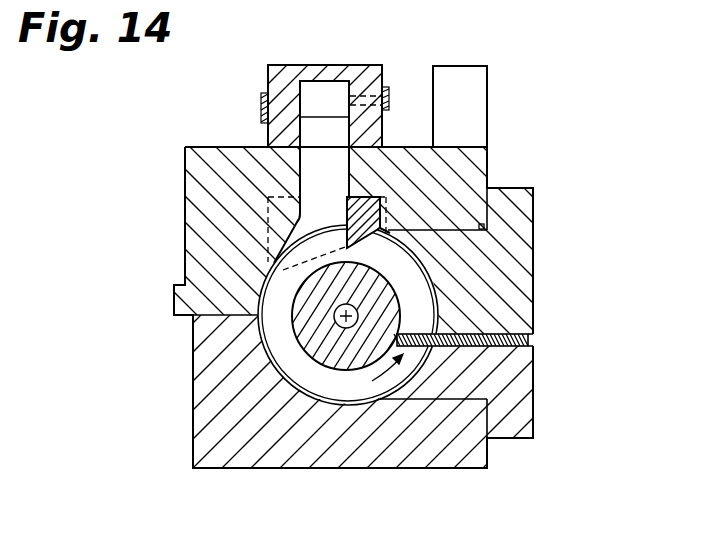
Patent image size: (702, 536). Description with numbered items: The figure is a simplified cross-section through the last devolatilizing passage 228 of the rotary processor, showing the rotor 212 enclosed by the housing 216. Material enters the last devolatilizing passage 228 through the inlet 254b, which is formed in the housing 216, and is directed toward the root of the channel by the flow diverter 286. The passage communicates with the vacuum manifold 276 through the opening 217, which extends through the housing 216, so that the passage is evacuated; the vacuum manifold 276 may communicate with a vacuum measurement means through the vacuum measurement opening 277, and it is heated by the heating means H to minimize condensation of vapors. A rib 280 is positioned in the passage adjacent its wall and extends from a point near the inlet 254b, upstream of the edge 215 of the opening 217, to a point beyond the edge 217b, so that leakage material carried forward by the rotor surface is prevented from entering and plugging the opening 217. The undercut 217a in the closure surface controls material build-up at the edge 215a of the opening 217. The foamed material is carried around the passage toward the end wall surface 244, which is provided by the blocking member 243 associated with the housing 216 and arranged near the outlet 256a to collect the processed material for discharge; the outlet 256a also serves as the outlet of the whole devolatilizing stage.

The vacuum manifold 276 is at (362, 65).
The vacuum measurement opening 277 is at (389, 95).
The heating means H is at (262, 100).
The rib 280 is at (320, 205).
The flow diverter 286 is at (348, 197).
The opening 217 is at (300, 181).
The edge of opening 215a is at (300, 231).
The undercut 217a is at (287, 232).
The edge of opening 217b is at (272, 262).
The edge of opening 215 is at (327, 233).
The inlet 254b is at (440, 280).
The blocking member 243 is at (528, 338).
The end wall surface 244 is at (413, 348).
The outlet 256a is at (402, 348).
The last devolatilizing passage 228 is at (270, 330).
The rotor 212 is at (322, 347).
The housing 216 is at (212, 458).